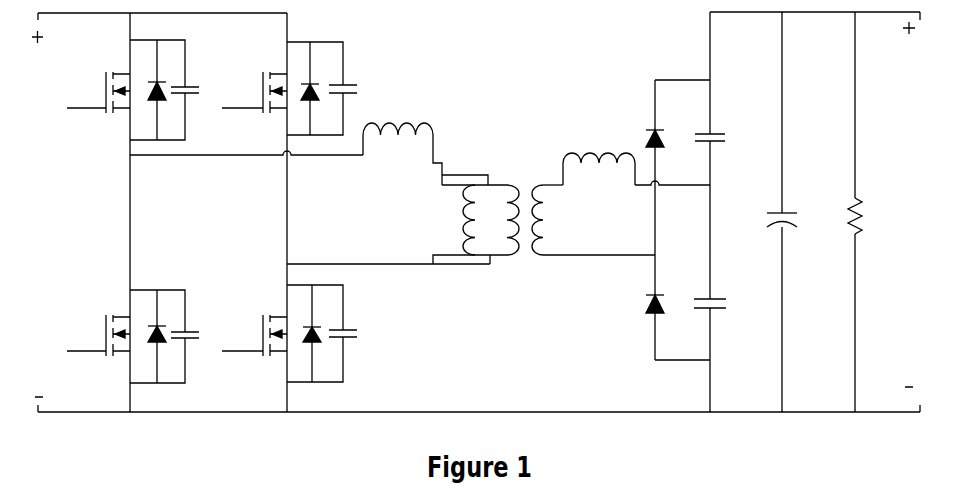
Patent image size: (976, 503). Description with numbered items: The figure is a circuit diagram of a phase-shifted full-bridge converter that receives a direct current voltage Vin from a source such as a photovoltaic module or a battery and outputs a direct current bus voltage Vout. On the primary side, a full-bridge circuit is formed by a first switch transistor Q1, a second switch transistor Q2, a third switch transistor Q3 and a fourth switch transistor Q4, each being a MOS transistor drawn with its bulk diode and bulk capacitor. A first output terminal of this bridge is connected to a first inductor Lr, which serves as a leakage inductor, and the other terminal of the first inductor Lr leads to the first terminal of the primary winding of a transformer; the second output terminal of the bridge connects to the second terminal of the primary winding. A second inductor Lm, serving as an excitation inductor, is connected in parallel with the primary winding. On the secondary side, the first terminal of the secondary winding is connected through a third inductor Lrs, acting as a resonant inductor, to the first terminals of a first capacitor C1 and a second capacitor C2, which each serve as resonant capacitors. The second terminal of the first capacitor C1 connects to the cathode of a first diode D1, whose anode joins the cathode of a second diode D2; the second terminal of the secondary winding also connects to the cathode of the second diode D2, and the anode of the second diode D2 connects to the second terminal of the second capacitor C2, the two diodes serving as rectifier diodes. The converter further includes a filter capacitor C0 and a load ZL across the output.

The first switch transistor Q1 is at (133, 90).
The second switch transistor Q2 is at (133, 336).
The third switch transistor Q3 is at (287, 88).
The fourth switch transistor Q4 is at (287, 333).
The first inductor Lr is at (402, 154).
The second inductor Lm is at (466, 219).
The third inductor Lrs is at (599, 173).
The first diode D1 is at (639, 140).
The second diode D2 is at (638, 306).
The first capacitor C1 is at (729, 140).
The second capacitor C2 is at (728, 307).
The filter capacitor C0 is at (767, 223).
The load ZL is at (837, 216).
The direct current voltage Vin is at (47, 212).
The direct current bus voltage Vout is at (903, 212).